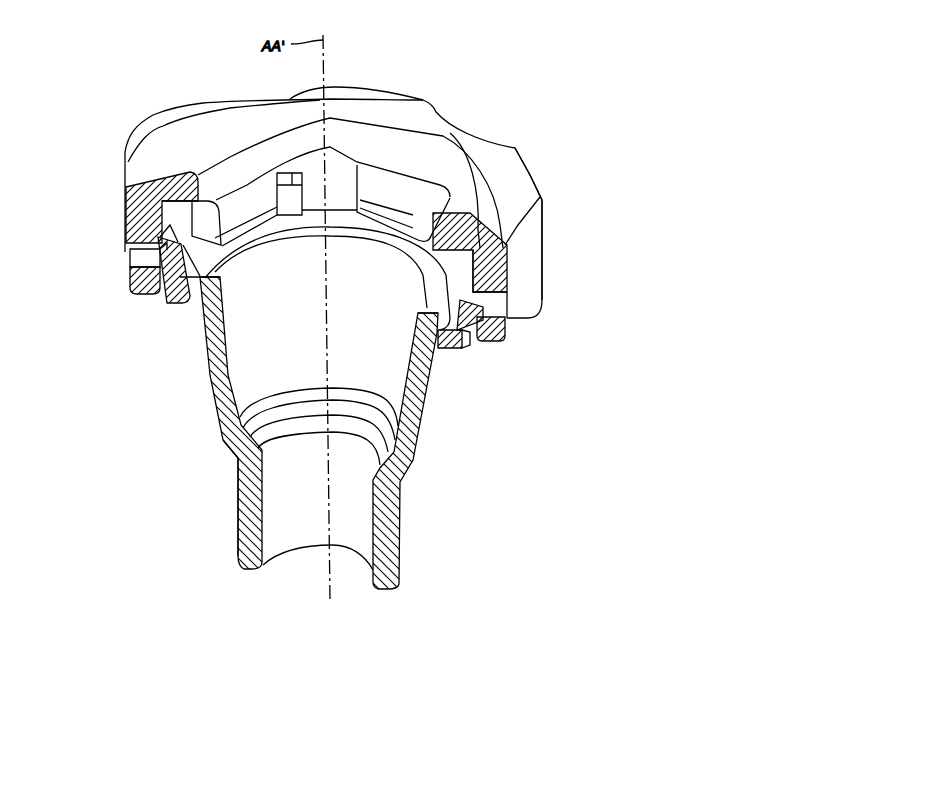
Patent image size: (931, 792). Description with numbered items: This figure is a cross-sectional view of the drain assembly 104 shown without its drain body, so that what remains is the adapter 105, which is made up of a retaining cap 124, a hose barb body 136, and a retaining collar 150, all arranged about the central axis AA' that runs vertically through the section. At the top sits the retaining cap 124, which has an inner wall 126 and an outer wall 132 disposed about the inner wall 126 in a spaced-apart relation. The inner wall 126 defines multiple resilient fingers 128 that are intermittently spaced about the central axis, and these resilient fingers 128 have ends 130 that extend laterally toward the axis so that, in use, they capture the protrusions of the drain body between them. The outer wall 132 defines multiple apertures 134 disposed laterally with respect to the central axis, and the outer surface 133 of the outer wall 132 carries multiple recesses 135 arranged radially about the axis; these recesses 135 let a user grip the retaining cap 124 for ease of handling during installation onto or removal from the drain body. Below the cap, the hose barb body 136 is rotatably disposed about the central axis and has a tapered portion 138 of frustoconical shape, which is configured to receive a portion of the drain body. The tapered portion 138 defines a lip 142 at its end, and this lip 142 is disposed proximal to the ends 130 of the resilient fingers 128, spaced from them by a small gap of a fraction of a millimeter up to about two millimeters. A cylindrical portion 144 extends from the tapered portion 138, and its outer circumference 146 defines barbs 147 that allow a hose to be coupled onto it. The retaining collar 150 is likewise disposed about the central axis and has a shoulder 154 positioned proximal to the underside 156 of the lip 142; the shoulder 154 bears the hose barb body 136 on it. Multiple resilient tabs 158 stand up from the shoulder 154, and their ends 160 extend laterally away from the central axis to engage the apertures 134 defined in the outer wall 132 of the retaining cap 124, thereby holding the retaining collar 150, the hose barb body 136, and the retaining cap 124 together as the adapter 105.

The drain assembly 104 is at (704, 91).
The adapter 105 is at (639, 153).
The retaining cap 124 is at (530, 166).
The inner wall 126 is at (316, 130).
The resilient fingers 128 is at (237, 198).
The ends 130 is at (266, 182).
The outer wall 132 is at (493, 267).
The outer surface 133 is at (545, 192).
The apertures 134 is at (503, 307).
The recesses 135 is at (526, 257).
The hose barb body 136 is at (207, 357).
The tapered portion 138 is at (206, 343).
The lip 142 is at (443, 337).
The cylindrical portion 144 is at (233, 466).
The outer circumference 146 is at (402, 488).
The barbs 147 is at (233, 525).
The retaining collar 150 is at (470, 358).
The shoulder 154 is at (460, 350).
The underside 156 is at (434, 335).
The resilient tabs 158 is at (140, 291).
The ends 160 is at (140, 257).